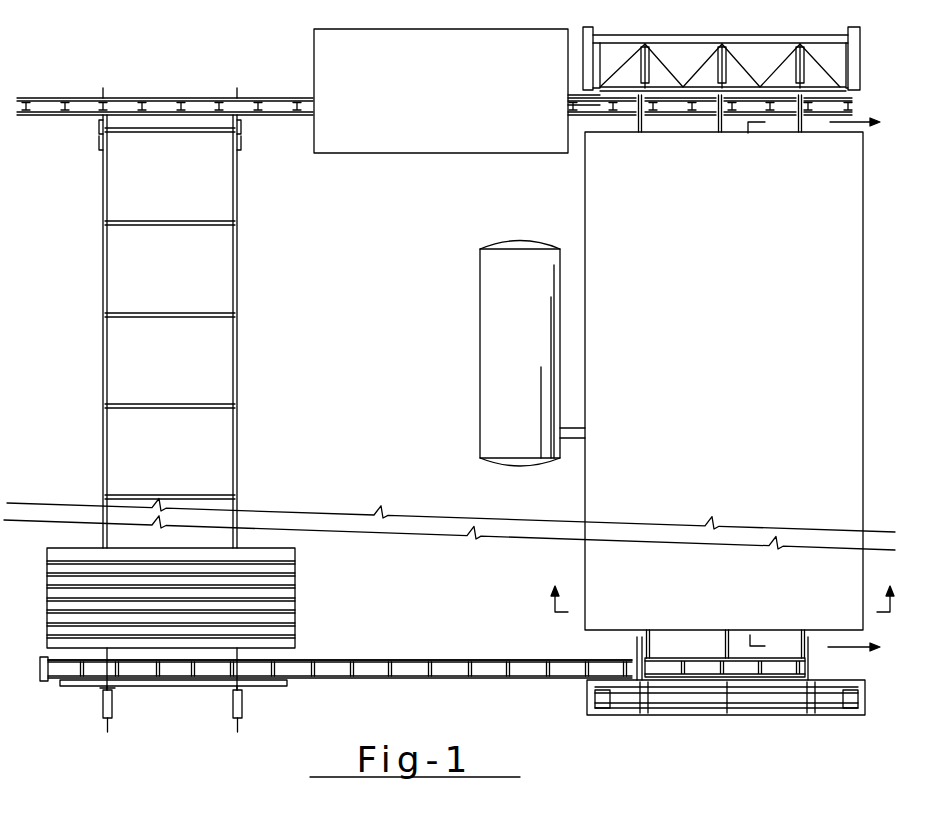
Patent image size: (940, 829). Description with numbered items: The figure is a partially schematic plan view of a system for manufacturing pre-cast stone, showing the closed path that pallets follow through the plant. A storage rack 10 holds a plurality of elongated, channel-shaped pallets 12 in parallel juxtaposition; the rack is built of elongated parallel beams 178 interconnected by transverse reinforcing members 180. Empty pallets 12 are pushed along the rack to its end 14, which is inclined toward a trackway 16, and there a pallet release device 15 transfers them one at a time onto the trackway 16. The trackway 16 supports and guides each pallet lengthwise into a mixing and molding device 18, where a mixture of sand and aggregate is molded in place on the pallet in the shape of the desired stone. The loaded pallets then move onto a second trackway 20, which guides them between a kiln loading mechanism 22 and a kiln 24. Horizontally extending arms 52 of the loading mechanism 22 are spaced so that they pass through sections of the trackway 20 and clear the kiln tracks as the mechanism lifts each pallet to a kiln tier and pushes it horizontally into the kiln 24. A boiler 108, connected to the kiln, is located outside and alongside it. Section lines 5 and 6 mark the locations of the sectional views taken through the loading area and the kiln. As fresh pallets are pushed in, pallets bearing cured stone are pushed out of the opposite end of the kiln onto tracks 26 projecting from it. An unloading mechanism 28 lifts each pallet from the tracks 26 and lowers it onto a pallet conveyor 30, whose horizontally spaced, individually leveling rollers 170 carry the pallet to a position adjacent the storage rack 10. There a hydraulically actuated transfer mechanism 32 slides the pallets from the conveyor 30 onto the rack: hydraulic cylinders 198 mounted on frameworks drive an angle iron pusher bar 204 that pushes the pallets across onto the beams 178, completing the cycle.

The storage rack 10 is at (240, 367).
The pallets 12 is at (290, 553).
The end of the storage rack 14 is at (107, 161).
The pallet release device 15 is at (240, 143).
The trackway 16 is at (277, 98).
The mixing and molding device 18 is at (452, 94).
The second trackway 20 is at (580, 115).
The kiln loading mechanism 22 is at (862, 57).
The kiln 24 is at (731, 269).
The tracks 26 is at (652, 123).
The unloading mechanism 28 is at (858, 718).
The pallet conveyor 30 is at (508, 680).
The transfer mechanism 32 is at (103, 695).
The arms 52 is at (636, 123).
The boiler 108 is at (528, 357).
The rollers 170 is at (436, 665).
The beams 178 is at (238, 283).
The transverse reinforcing members 180 is at (160, 313).
The hydraulic cylinder 198 is at (114, 710).
The pusher bar 204 is at (208, 686).
The section line 5- 5 is at (823, 384).
The section line 6- 6 is at (722, 587).